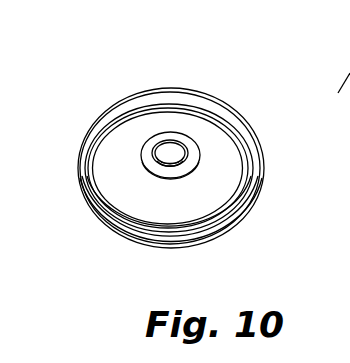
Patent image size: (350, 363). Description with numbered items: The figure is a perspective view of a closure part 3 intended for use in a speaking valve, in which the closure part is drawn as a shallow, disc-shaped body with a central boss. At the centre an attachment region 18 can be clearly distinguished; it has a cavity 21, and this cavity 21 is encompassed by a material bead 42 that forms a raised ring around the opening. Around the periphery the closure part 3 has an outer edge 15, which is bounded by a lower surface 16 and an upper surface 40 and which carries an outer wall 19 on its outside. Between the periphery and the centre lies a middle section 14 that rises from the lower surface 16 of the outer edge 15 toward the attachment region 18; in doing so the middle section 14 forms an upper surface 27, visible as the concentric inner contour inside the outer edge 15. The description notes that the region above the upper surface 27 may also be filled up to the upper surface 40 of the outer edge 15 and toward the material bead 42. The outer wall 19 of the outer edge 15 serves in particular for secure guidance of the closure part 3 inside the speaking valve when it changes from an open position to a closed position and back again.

The closure part 3 is at (270, 77).
The middle section 14 is at (131, 192).
The outer edge 15 is at (242, 211).
The lower surface 16 is at (223, 240).
The attachment region 18 is at (150, 133).
The outer wall 19 is at (167, 233).
The cavity 21 is at (168, 151).
The upper surface 27 is at (110, 172).
The upper surface 40 is at (87, 134).
The material bead 42 is at (193, 152).